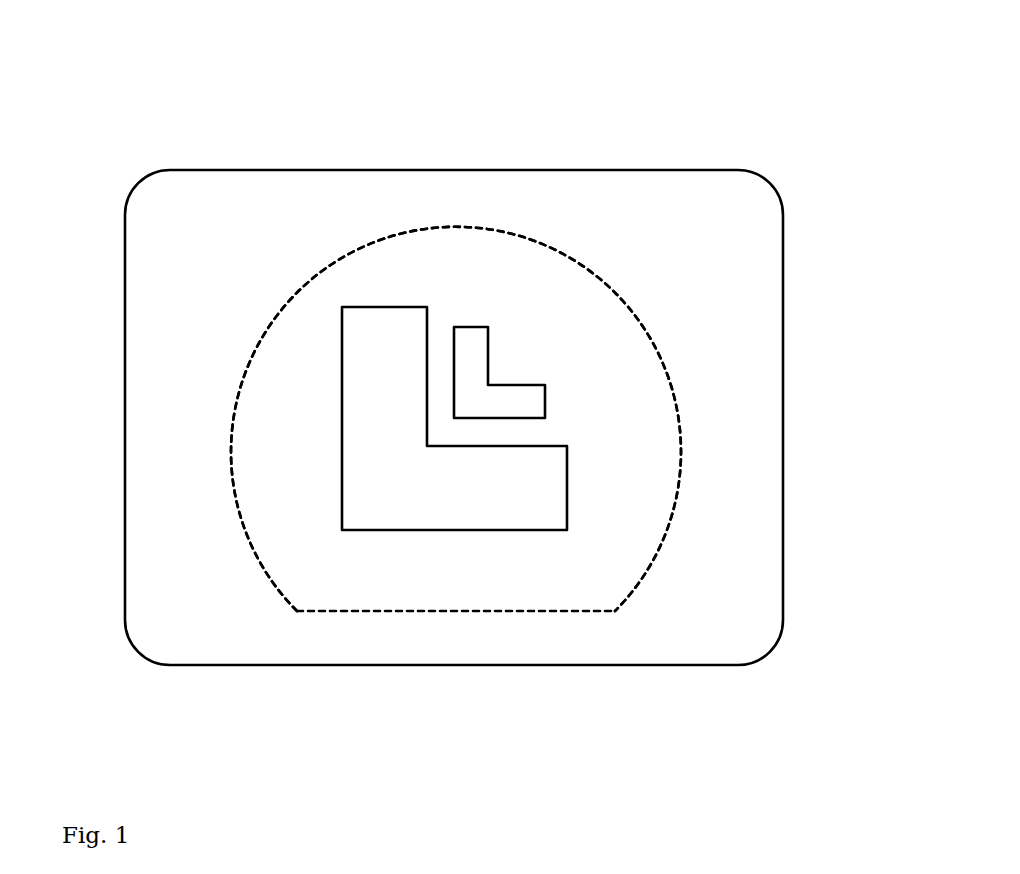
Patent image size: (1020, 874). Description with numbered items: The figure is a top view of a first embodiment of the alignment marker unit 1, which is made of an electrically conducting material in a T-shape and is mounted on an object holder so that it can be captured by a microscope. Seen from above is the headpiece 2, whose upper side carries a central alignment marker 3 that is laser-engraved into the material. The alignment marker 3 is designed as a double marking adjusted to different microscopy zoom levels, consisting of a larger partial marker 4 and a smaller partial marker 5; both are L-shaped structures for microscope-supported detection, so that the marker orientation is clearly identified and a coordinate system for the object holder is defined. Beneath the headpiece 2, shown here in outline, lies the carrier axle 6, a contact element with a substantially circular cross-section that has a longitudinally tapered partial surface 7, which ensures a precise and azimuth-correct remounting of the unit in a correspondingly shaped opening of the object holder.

The alignment marker unit 1 is at (456, 332).
The headpiece 2 is at (680, 198).
The alignment marker 3 is at (320, 457).
The larger partial marker 4 is at (510, 385).
The smaller partial marker 5 is at (455, 518).
The carrier axle 6 is at (675, 508).
The partial surface 7 is at (548, 612).